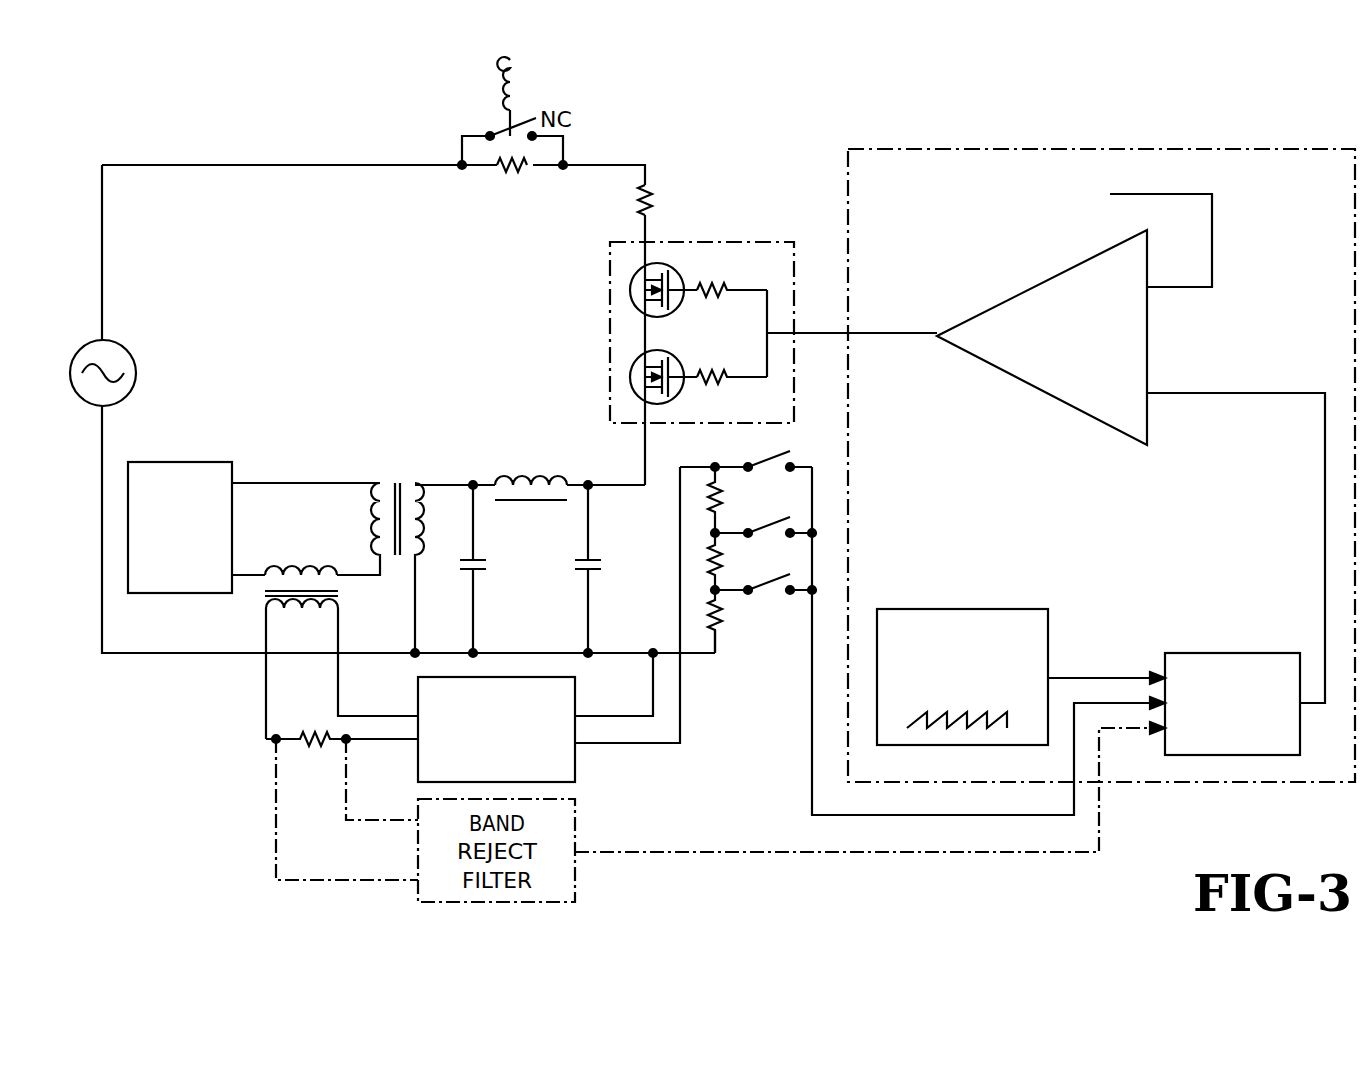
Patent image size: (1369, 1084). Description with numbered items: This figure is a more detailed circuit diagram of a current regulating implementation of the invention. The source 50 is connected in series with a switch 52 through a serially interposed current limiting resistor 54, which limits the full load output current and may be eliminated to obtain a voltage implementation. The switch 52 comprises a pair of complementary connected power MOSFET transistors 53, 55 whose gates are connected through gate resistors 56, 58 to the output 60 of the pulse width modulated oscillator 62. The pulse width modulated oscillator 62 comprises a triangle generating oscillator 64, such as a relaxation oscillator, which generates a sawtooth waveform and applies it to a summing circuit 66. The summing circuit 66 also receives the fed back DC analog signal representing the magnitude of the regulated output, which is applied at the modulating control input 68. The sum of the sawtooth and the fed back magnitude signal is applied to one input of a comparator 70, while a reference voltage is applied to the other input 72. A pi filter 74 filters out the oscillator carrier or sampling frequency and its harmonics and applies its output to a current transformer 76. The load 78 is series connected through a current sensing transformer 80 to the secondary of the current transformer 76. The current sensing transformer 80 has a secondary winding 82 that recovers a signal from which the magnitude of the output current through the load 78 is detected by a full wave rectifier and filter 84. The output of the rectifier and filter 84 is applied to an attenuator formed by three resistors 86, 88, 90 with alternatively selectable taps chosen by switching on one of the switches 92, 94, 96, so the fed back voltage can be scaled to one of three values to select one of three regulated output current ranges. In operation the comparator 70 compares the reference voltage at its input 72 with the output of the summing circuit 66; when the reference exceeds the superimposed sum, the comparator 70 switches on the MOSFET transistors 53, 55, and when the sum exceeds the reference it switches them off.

The source 50 is at (126, 346).
The switch 52 is at (642, 332).
The MOSFET transistor 53 is at (640, 278).
The current limiting resistor 54 is at (640, 200).
The MOSFET transistor 55 is at (640, 368).
The gate resistor 56 is at (699, 292).
The gate resistor 58 is at (699, 378).
The output 60 is at (897, 335).
The pulse width modulated oscillator 62 is at (1140, 149).
The triangle generating oscillator 64 is at (990, 609).
The summing circuit 66 is at (1222, 653).
The modulating control input 68 is at (809, 774).
The comparator 70 is at (1042, 392).
The input 72 is at (1180, 287).
The pi filter 74 is at (492, 462).
The current transformer 76 is at (393, 487).
The load 78 is at (172, 462).
The current sensing transformer 80 is at (280, 578).
The secondary winding 82 is at (340, 608).
The full wave rectifier and filter 84 is at (575, 770).
The resistor 86 is at (712, 625).
The resistor 88 is at (712, 567).
The resistor 90 is at (712, 504).
The switch 92 is at (763, 591).
The switch 94 is at (768, 527).
The switch 96 is at (766, 460).